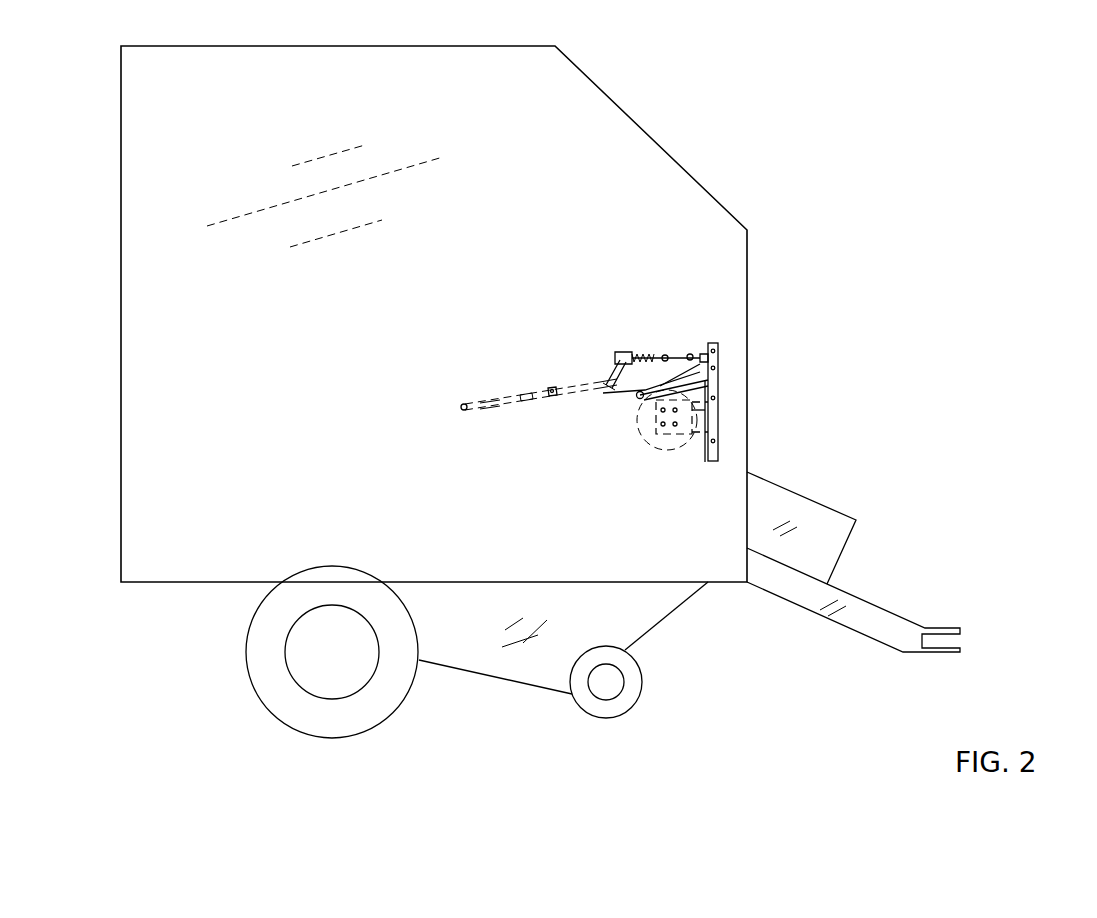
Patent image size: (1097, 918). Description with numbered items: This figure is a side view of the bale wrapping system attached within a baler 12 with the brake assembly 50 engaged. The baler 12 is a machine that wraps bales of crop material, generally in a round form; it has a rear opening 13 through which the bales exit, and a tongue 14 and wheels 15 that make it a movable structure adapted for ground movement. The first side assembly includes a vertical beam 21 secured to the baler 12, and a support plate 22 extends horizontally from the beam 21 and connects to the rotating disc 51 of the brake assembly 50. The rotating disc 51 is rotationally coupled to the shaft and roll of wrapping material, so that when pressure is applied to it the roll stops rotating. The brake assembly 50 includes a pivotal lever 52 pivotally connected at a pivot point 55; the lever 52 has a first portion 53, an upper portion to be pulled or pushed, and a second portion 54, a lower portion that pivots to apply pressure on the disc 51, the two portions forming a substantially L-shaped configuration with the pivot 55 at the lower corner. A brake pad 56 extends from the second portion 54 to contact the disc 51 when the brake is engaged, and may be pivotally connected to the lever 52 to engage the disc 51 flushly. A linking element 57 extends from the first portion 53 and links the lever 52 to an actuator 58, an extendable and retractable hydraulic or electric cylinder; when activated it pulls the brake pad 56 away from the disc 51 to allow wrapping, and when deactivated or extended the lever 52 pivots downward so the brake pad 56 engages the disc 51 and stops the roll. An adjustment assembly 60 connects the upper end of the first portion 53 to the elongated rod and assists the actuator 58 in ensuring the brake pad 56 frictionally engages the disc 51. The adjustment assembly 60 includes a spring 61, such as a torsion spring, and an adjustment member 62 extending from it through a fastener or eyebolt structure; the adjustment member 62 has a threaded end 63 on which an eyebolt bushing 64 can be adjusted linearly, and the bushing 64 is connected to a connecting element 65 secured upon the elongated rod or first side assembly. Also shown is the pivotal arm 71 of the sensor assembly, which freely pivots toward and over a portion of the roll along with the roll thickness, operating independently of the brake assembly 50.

The baler 12 is at (596, 166).
The rear opening 13 is at (748, 338).
The tongue 14 is at (869, 617).
The wheels 15 is at (258, 664).
The vertical beam 21 is at (720, 378).
The support plate 22 is at (752, 452).
The brake assembly 50 is at (565, 271).
The rotating disc 51 is at (665, 434).
The pivotal lever 52 is at (613, 363).
The first portion 53 is at (640, 410).
The second portion 54 is at (650, 403).
The pivot point 55 is at (625, 394).
The brake pad 56 is at (722, 407).
The linking element 57 is at (645, 400).
The actuator 58 is at (495, 400).
The adjustment assembly 60 is at (672, 357).
The spring 61 is at (655, 355).
The adjustment member 62 is at (678, 355).
The threaded end 63 is at (690, 355).
The eyebolt bushing 64 is at (705, 345).
The connecting element 65 is at (712, 345).
The pivotal arm 71 is at (722, 403).